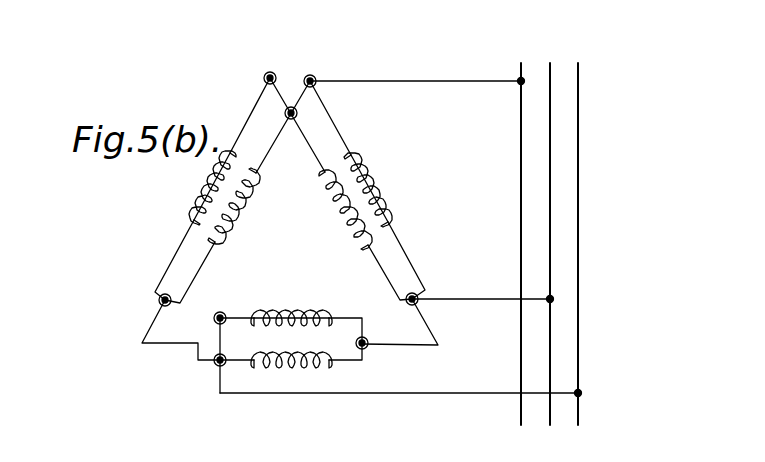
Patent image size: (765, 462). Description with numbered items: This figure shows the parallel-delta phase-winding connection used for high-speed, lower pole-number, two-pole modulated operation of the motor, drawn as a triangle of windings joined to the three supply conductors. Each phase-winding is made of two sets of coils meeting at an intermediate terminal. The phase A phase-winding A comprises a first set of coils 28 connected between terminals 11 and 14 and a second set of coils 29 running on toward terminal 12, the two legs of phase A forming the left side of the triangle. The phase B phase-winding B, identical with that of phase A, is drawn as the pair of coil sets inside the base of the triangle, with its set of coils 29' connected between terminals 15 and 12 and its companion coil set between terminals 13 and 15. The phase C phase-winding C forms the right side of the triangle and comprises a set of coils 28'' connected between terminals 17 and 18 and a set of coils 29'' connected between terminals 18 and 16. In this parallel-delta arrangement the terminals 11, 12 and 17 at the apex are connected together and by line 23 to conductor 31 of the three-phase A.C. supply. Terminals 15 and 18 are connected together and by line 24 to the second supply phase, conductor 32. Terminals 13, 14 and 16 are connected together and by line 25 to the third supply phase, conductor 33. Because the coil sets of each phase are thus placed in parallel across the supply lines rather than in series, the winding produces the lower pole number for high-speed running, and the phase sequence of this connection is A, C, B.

The terminal 11 is at (269, 72).
The terminal 12 is at (292, 120).
The terminal 13 is at (213, 363).
The terminal 14 is at (159, 300).
The terminal 15 is at (367, 349).
The terminal 16 is at (220, 312).
The terminal 17 is at (311, 75).
The terminal 18 is at (409, 305).
The line 23 is at (406, 80).
The line 24 is at (499, 298).
The line 25 is at (491, 391).
The first set of coils 28 is at (194, 188).
The set of coils 28'' is at (333, 286).
The set of coils 29 is at (248, 206).
The set of coils 29' is at (291, 297).
The set of coils 29'' is at (336, 210).
The conductor 31 is at (522, 188).
The conductor 32 is at (552, 231).
The conductor 33 is at (580, 166).
The phase A phase-winding A is at (188, 212).
The phase B phase-winding B is at (320, 310).
The phase C phase-winding C is at (386, 203).